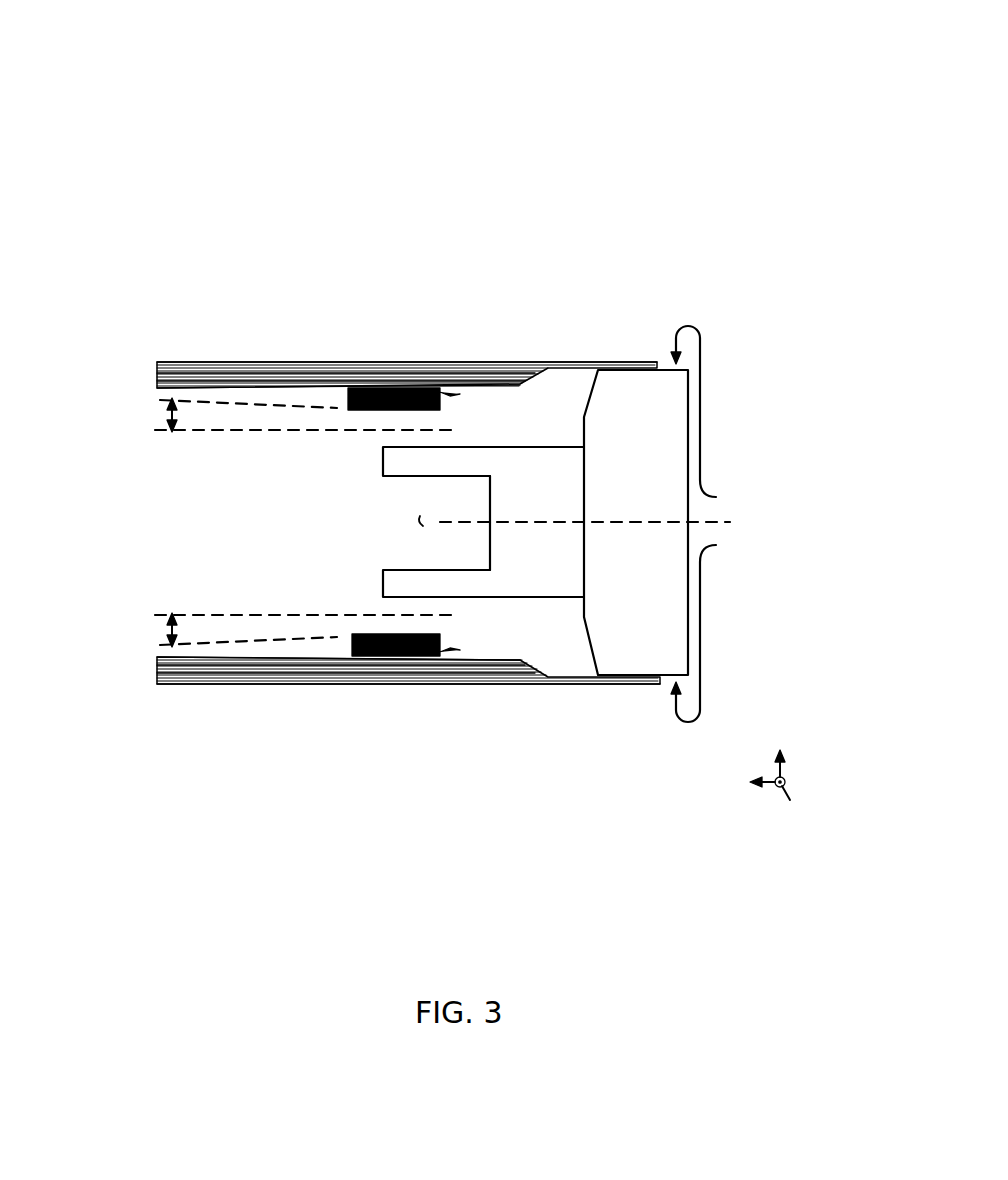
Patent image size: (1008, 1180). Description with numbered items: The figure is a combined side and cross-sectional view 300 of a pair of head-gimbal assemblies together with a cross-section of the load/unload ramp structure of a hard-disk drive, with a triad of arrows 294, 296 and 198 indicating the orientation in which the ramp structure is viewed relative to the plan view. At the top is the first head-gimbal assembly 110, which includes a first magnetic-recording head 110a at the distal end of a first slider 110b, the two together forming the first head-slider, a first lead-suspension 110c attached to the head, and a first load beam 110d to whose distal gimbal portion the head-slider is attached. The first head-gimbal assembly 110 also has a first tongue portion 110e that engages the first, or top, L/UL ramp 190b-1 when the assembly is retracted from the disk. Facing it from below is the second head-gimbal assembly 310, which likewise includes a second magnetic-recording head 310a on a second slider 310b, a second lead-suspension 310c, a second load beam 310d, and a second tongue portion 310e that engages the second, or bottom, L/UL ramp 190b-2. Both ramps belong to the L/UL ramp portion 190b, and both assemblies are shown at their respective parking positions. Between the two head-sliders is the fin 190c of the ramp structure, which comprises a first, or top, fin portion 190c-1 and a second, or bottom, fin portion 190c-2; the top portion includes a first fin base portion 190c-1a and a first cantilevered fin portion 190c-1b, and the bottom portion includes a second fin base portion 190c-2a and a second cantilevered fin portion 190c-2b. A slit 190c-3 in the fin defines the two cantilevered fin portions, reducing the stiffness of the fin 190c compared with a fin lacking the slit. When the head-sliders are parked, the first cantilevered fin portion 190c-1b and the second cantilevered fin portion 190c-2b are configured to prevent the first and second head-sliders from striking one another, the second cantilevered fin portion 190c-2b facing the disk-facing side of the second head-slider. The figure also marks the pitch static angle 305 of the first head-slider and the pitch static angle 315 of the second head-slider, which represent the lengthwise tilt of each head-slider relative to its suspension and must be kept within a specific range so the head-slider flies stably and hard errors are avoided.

The combined side and cross-sectional view 300 is at (124, 66).
The first head-gimbal assembly 110 is at (157, 112).
The first magnetic-recording head 110a is at (437, 410).
The first slider 110b is at (378, 393).
The first lead-suspension 110c is at (317, 381).
The first load beam 110d is at (303, 385).
The first tongue portion 110e is at (622, 362).
The pitch static angle 305 is at (168, 405).
The pitch static angle 315 is at (168, 642).
The fin 190c is at (153, 453).
The first fin portion 190c-1 is at (258, 450).
The first fin base portion 190c-1a is at (540, 491).
The first cantilevered fin portion 190c-1b is at (437, 464).
The slit 190c-3 is at (404, 516).
The second fin portion 190c-2 is at (258, 540).
The second fin base portion 190c-2a is at (540, 555).
The second cantilevered fin portion 190c-2b is at (437, 582).
The L/UL ramp portion 190b is at (806, 480).
The first L/UL ramp 190b-1 is at (716, 497).
The second L/UL ramp 190b-2 is at (716, 545).
The second head-gimbal assembly 310 is at (157, 790).
The second magnetic-recording head 310a is at (437, 636).
The second slider 310b is at (375, 655).
The second lead-suspension 310c is at (317, 664).
The second load beam 310d is at (300, 657).
The second tongue portion 310e is at (622, 683).
The arrow 198 is at (788, 769).
The arrow 294 is at (770, 786).
The arrow 296 is at (804, 809).